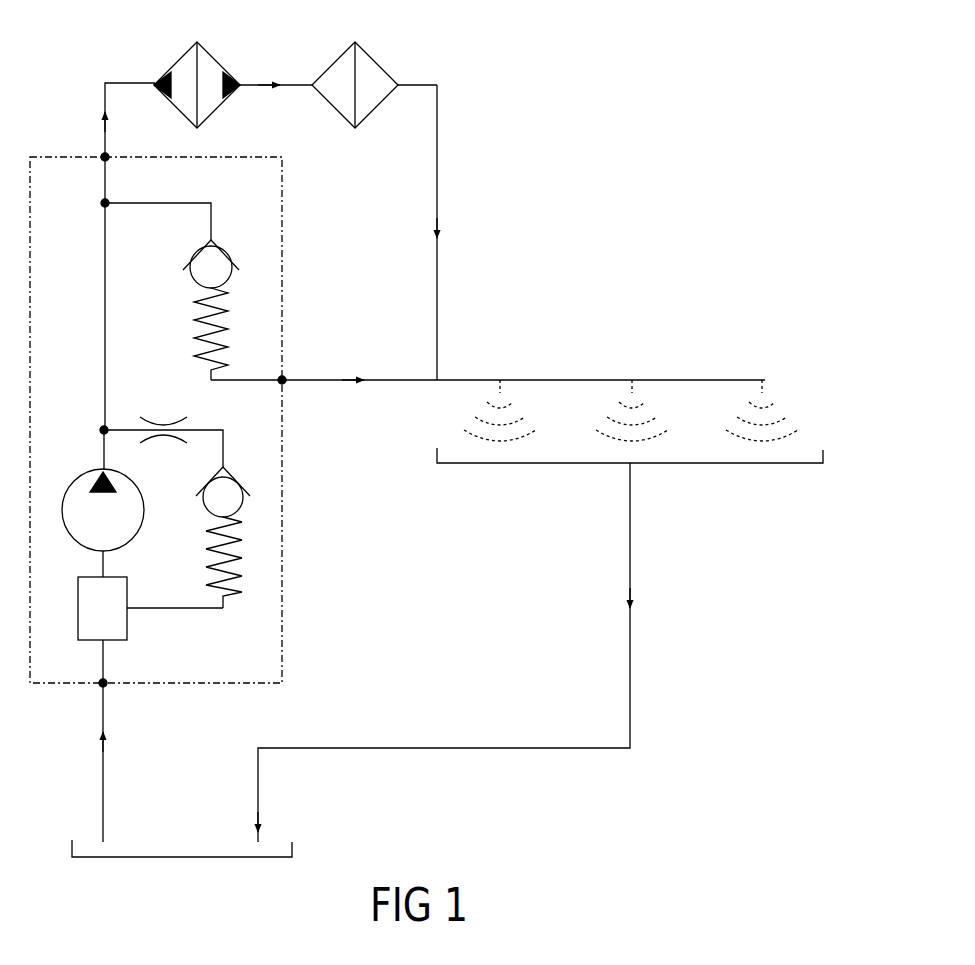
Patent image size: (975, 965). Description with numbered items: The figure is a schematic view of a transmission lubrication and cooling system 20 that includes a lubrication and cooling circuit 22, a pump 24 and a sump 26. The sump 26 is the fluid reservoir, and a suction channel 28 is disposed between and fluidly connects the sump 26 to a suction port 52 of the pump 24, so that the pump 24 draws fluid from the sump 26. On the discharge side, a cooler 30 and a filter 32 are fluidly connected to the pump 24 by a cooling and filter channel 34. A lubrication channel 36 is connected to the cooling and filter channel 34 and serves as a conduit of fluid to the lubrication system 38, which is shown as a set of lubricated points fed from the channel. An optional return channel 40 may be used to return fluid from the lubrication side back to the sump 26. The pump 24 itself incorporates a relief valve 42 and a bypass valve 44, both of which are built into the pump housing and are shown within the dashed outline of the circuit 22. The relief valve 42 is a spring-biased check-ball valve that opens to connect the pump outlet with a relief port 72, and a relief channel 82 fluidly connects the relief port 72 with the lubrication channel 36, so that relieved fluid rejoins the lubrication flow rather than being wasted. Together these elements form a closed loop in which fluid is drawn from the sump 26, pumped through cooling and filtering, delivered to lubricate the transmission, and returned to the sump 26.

The transmission lubrication and cooling system 20 is at (650, 107).
The lubrication and cooling circuit 22 is at (440, 153).
The pump 24 is at (80, 478).
The sump 26 is at (293, 850).
The suction channel 28 is at (102, 780).
The cooler 30 is at (176, 63).
The filter 32 is at (380, 63).
The cooling and filter channel 34 is at (104, 92).
The lubrication channel 36 is at (460, 378).
The lubrication system 38 is at (496, 390).
The return channel 40 is at (630, 680).
The relief valve 42 is at (205, 318).
The bypass valve 44 is at (198, 548).
The suction port 52 is at (106, 686).
The relief port 72 is at (285, 384).
The relief channel 82 is at (405, 378).